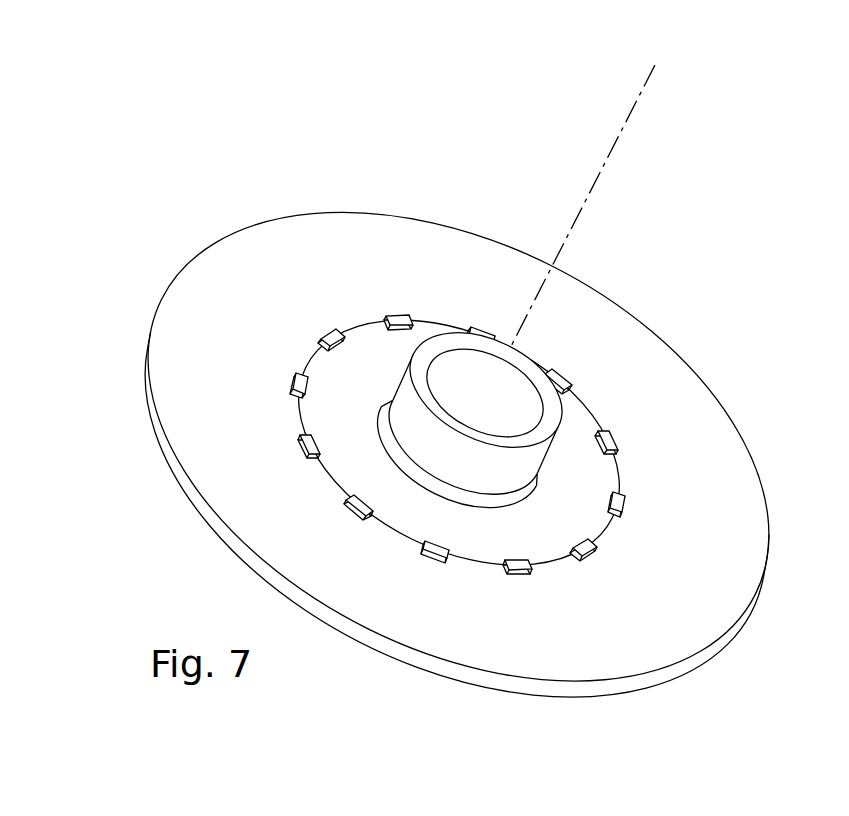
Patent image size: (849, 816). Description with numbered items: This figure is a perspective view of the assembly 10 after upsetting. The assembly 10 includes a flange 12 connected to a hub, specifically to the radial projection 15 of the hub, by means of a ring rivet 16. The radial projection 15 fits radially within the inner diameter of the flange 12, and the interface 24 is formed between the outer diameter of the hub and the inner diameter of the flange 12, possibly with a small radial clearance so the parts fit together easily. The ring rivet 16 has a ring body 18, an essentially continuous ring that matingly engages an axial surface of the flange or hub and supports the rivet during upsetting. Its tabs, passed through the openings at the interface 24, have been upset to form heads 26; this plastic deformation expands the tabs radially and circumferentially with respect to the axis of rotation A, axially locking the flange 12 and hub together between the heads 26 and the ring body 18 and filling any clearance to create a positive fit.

The assembly 10 is at (160, 111).
The flange 12 is at (610, 355).
The radial projection 15 is at (548, 352).
The ring rivet 16 is at (848, 254).
The ring body 18 is at (478, 470).
The interface 24 is at (632, 472).
The head 26 is at (628, 505).
The axis of rotation A is at (617, 128).